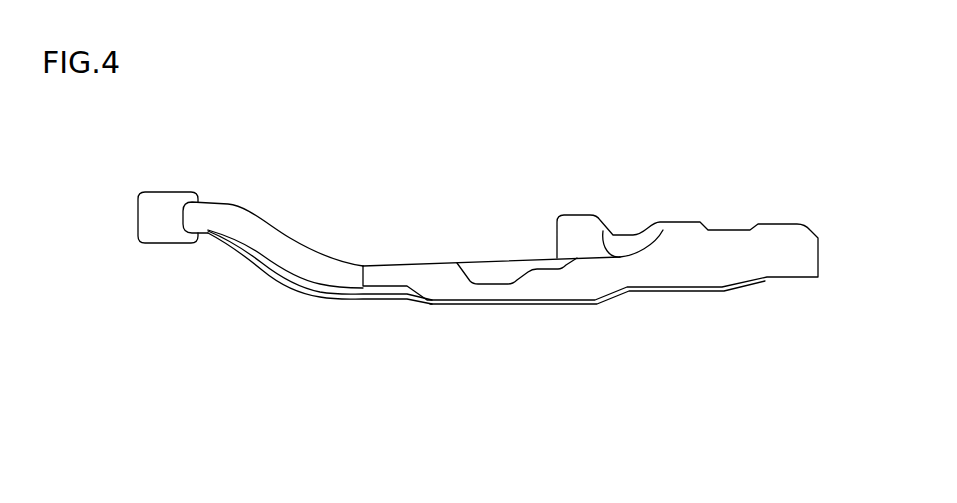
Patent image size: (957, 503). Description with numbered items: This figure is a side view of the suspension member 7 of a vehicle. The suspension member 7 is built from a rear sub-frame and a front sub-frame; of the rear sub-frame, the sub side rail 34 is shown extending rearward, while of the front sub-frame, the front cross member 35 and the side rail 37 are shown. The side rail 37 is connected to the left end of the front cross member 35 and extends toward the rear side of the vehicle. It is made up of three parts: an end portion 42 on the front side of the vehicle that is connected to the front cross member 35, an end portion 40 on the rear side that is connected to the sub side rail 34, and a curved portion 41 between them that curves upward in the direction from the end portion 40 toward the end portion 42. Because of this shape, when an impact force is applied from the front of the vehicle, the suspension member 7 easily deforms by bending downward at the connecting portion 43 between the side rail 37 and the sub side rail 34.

The suspension member 7 is at (506, 171).
The sub side rail 34 is at (441, 272).
The front cross member 35 is at (163, 203).
The side rail 37 is at (245, 220).
The end portion 40 is at (378, 287).
The curved portion 41 is at (297, 271).
The end portion 42 is at (213, 226).
The connecting portion 43 is at (358, 313).